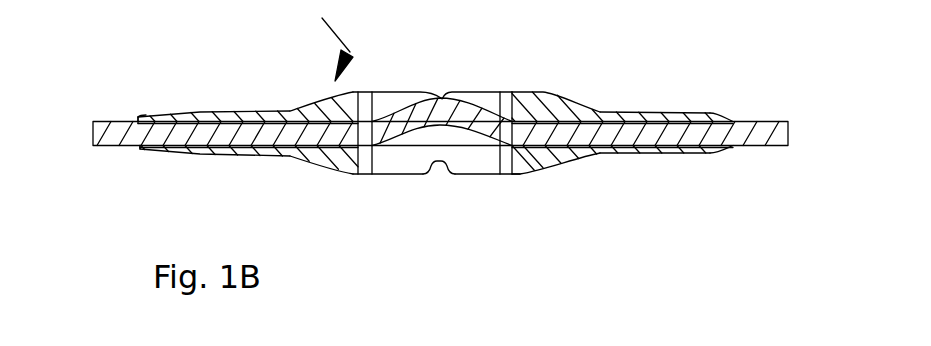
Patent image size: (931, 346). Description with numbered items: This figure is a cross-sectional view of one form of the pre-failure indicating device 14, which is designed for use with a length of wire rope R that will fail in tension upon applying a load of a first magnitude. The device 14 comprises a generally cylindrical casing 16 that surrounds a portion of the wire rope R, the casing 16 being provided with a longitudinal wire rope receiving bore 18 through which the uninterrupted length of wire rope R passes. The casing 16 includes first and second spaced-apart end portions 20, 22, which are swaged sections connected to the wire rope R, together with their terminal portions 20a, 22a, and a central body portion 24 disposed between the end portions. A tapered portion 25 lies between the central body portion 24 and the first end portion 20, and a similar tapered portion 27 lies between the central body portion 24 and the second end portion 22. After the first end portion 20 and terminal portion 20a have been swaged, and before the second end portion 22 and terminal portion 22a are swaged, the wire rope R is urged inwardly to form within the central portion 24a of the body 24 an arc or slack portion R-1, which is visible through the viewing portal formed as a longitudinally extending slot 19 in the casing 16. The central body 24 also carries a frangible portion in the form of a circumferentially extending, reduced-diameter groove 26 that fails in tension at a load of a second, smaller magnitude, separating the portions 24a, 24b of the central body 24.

The pre-failure indicating device 14 is at (325, 41).
The wire rope R is at (103, 121).
The slack portion R-1 is at (415, 110).
The casing 16 is at (358, 177).
The wire rope receiving bore 18 is at (138, 148).
The longitudinally extending slot 19 is at (478, 147).
The first end portion 20 is at (223, 112).
The terminal portion 20a is at (153, 115).
The second end portion 22 is at (647, 113).
The terminal portion 22a is at (710, 113).
The central body portion 24 is at (407, 175).
The central portion 24a is at (388, 103).
The portion of central body 24b is at (478, 92).
The tapered portion 25 is at (310, 103).
The groove 26 is at (436, 176).
The tapered portion 27 is at (543, 98).